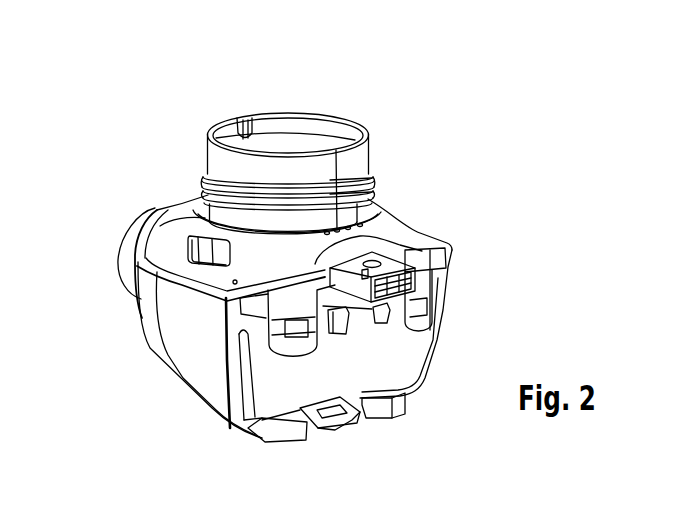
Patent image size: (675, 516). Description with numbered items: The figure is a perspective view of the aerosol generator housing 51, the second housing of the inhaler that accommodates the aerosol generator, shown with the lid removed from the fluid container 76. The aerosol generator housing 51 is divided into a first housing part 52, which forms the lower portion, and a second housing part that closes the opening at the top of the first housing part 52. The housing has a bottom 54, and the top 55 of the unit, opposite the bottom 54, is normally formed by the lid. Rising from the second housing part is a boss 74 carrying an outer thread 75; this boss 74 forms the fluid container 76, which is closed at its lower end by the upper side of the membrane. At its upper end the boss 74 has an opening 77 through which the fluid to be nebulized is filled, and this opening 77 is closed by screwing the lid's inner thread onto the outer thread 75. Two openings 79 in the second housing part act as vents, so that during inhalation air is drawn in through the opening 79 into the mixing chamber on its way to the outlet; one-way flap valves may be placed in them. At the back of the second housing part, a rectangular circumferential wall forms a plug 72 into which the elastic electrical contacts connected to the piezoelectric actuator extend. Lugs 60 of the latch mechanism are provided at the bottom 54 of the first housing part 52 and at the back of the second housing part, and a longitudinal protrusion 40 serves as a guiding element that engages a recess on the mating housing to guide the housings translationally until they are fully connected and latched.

The top 55 is at (370, 92).
The boss 74 is at (356, 157).
The outer thread 75 is at (203, 177).
The fluid container 76 is at (270, 150).
The opening 77 is at (294, 142).
The aerosol generator housing 51 is at (121, 376).
The first housing part 52 is at (205, 377).
The opening 79 is at (205, 252).
The plug 72 is at (360, 252).
The lug 60 is at (447, 260).
The bottom 54 is at (318, 445).
The longitudinal protrusion 40 is at (402, 412).